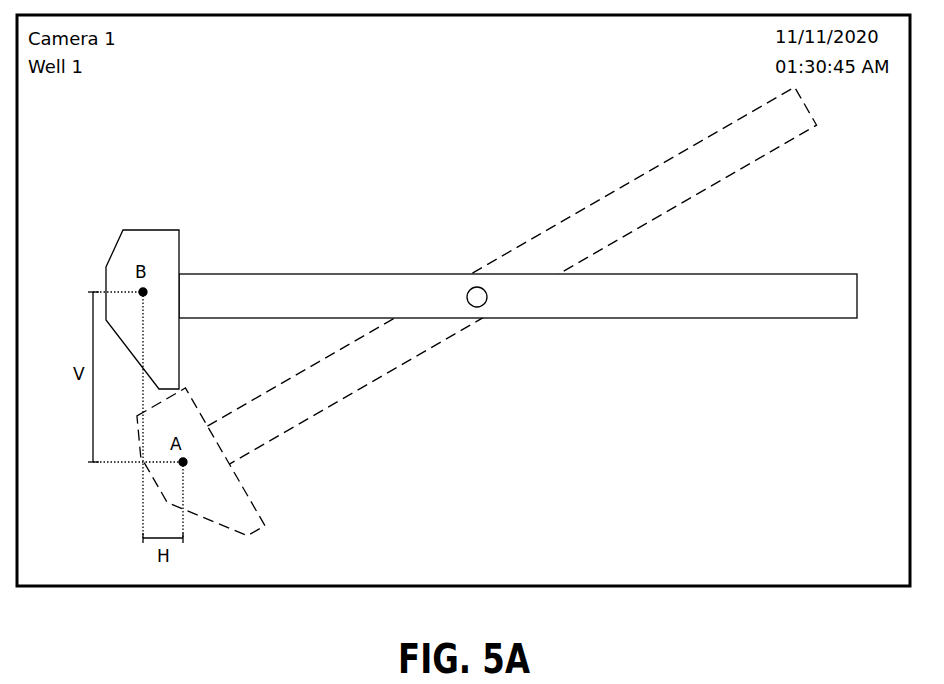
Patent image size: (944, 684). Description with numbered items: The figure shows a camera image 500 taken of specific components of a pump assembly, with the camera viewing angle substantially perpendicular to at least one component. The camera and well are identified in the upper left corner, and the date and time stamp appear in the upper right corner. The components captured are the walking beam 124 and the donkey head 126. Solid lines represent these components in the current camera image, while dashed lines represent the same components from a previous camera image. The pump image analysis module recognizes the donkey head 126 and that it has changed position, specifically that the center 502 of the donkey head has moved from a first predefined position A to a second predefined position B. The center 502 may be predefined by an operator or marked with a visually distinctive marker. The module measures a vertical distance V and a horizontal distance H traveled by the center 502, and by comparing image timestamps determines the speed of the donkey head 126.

The camera image 500 is at (481, 61).
The walking beam 124 is at (448, 274).
The donkey head 126 is at (149, 230).
The center of the donkey head 502 is at (146, 289).